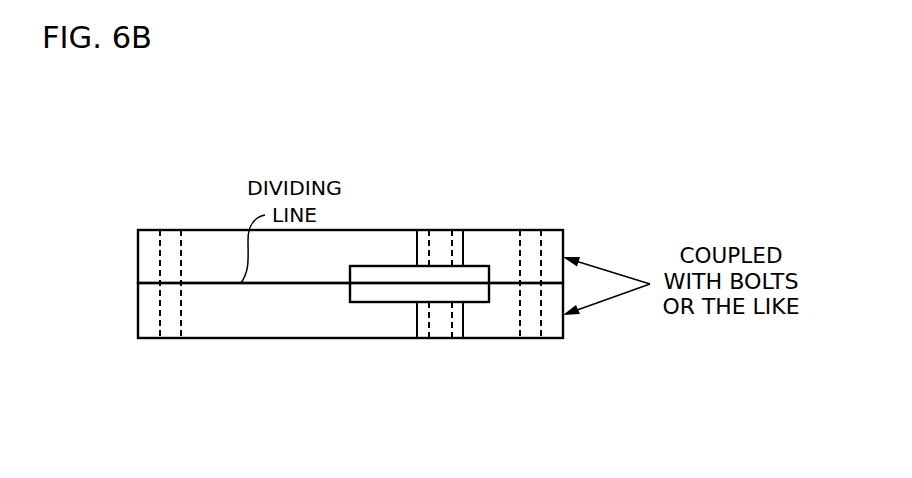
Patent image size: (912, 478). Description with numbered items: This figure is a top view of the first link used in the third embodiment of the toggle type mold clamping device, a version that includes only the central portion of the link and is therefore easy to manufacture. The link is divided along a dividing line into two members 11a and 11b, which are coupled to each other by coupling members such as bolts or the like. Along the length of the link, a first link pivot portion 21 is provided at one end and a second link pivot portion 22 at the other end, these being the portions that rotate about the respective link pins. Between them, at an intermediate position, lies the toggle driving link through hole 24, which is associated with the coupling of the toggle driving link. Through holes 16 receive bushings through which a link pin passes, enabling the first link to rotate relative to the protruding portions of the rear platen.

The first link member 11a is at (138, 252).
The first link member 11b is at (138, 317).
The through hole 16 is at (170, 230).
The first link pivot portion 21 is at (147, 229).
The second link pivot portion 22 is at (552, 229).
The toggle driving link through hole 24 is at (377, 277).